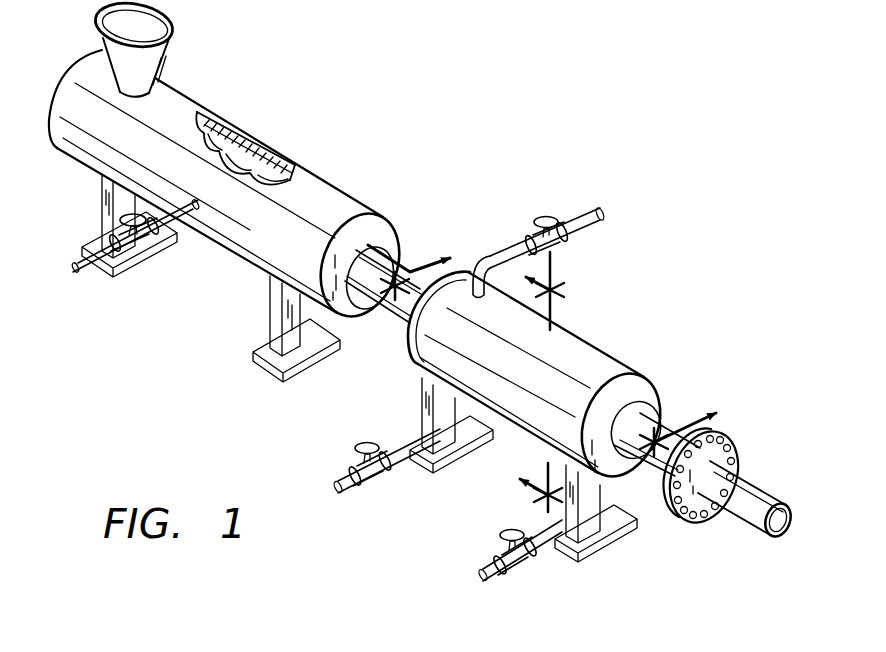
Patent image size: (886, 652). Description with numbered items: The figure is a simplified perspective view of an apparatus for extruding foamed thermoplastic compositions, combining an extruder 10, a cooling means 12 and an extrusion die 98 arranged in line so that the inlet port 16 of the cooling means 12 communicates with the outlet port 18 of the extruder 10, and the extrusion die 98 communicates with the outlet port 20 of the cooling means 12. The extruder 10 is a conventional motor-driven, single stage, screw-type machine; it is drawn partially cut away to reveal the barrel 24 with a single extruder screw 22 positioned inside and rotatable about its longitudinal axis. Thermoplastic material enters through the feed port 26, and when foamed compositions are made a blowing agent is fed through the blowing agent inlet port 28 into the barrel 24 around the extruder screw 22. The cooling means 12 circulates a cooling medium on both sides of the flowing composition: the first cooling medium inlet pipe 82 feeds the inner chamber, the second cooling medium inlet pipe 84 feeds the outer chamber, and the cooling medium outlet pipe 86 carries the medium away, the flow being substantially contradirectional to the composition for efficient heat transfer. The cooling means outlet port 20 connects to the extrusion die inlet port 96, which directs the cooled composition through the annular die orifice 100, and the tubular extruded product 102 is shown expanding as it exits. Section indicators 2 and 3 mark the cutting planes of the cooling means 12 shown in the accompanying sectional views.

The extruder 10 is at (314, 112).
The cooling means 12 is at (620, 333).
The inlet port 16 is at (400, 323).
The outlet port 18 is at (382, 245).
The outlet port 20 is at (645, 419).
The extruder screw 22 is at (232, 140).
The barrel 24 is at (262, 159).
The feed port 26 is at (133, 31).
The blowing agent inlet port 28 is at (192, 216).
The first cooling medium inlet pipe 82 is at (407, 437).
The second cooling medium inlet pipe 84 is at (532, 545).
The cooling medium outlet pipe 86 is at (508, 262).
The extrusion die inlet port 96 is at (652, 477).
The extrusion die 98 is at (673, 527).
The die orifice 100 is at (703, 471).
The tubular extruded product 102 is at (743, 507).
The section line 2- 2 is at (552, 348).
The section line 3- 3 is at (532, 382).